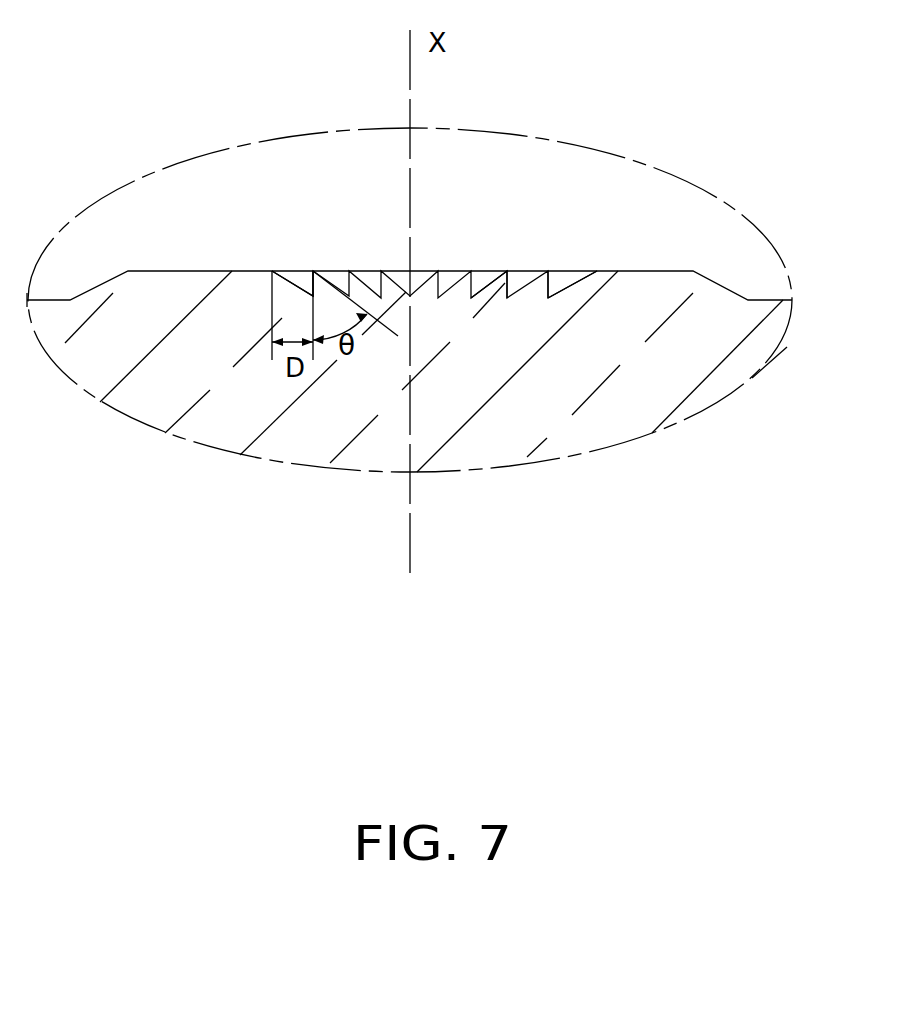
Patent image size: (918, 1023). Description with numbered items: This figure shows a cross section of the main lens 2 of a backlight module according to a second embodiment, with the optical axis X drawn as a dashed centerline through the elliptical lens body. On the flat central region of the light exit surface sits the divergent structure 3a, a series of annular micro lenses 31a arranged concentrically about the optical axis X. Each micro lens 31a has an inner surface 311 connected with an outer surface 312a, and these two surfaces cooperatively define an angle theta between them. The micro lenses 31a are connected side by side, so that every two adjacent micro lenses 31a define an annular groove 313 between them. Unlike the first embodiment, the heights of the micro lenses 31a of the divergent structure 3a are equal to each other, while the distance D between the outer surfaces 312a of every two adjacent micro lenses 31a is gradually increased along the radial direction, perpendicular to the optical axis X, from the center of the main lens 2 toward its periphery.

The main lens 2 is at (642, 405).
The divergent structure 3a is at (363, 263).
The micro lens 31a is at (281, 285).
The inner surface 311 is at (532, 273).
The outer surface 312a is at (553, 276).
The annular groove 313 is at (482, 280).